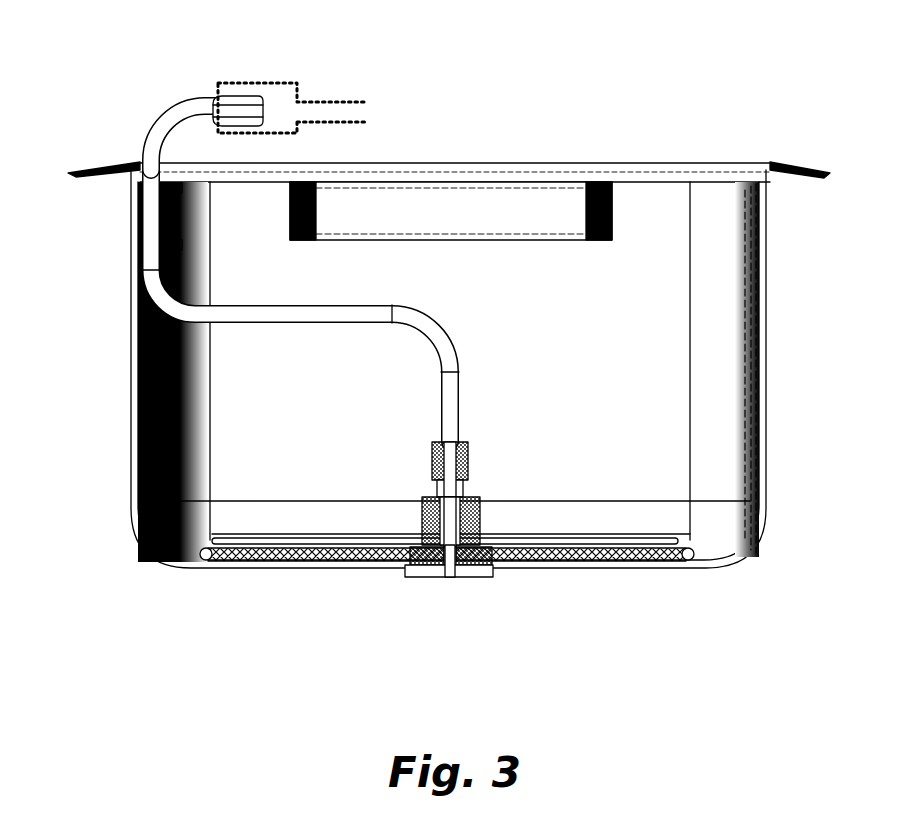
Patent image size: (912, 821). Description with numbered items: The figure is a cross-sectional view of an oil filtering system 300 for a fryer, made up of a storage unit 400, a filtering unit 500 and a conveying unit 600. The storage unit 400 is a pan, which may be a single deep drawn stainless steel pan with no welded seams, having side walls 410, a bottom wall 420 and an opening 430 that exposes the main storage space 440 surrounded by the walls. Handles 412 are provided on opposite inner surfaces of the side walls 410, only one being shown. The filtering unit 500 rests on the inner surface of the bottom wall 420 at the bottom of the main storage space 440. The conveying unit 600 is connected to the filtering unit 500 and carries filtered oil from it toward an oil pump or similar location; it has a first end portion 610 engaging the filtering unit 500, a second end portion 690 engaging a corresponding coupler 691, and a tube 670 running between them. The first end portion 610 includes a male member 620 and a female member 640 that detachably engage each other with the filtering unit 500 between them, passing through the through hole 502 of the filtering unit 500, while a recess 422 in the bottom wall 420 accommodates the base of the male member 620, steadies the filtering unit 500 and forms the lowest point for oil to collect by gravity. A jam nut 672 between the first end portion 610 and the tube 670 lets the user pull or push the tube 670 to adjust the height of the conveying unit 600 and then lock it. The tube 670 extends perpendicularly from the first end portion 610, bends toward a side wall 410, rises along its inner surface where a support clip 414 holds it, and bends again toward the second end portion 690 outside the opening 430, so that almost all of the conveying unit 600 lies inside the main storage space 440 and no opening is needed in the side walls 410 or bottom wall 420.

The oil filtering system 300 is at (110, 100).
The storage unit 400 is at (816, 152).
The side walls 410 is at (133, 388).
The handles 412 is at (434, 188).
The support clip 414 is at (185, 247).
The bottom wall 420 is at (303, 570).
The recess 422 is at (465, 577).
The opening 430 is at (606, 138).
The main storage space 440 is at (652, 313).
The filtering unit 500 is at (632, 528).
The through hole 502 is at (462, 558).
The conveying unit 600 is at (464, 337).
The first end portion 610 is at (480, 523).
The male member 620 is at (443, 567).
The female member 640 is at (422, 505).
The tube 670 is at (268, 318).
The jam nut 672 is at (470, 452).
The second end portion 690 is at (237, 98).
The coupler 691 is at (297, 83).